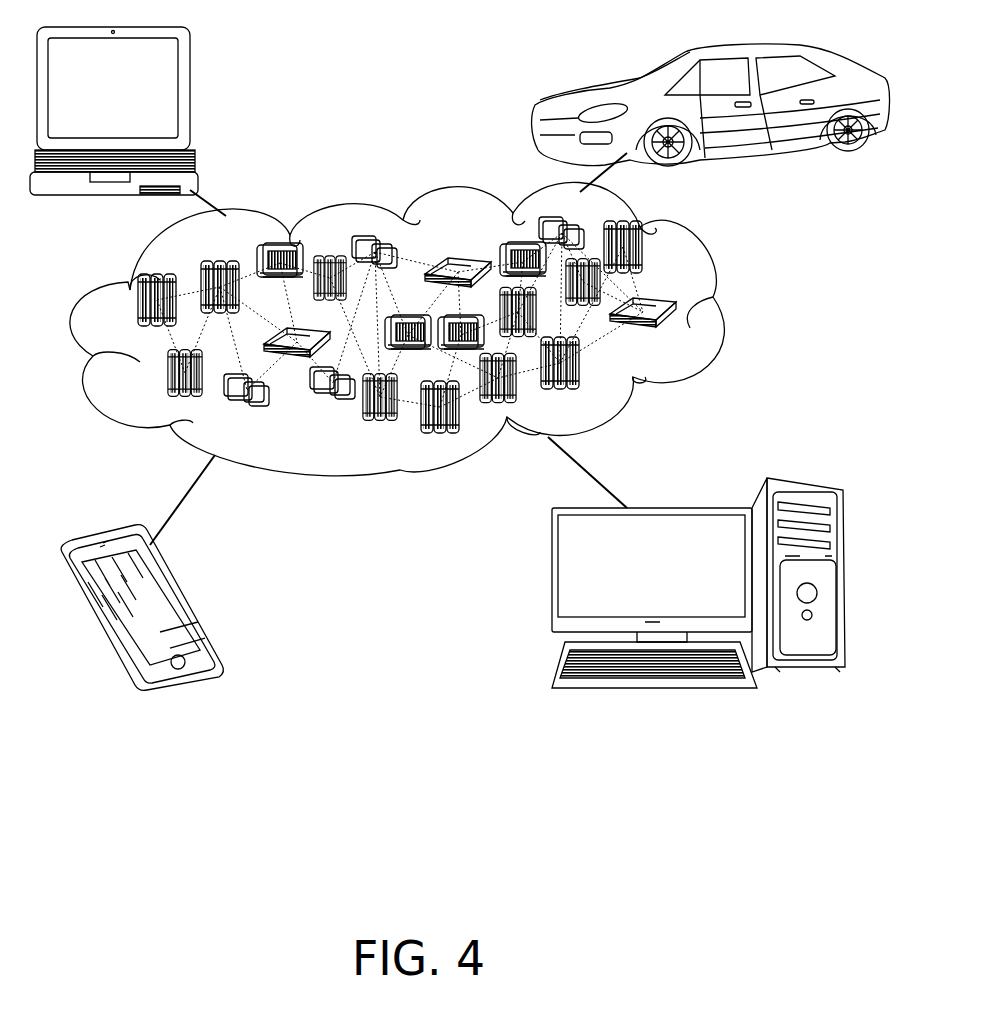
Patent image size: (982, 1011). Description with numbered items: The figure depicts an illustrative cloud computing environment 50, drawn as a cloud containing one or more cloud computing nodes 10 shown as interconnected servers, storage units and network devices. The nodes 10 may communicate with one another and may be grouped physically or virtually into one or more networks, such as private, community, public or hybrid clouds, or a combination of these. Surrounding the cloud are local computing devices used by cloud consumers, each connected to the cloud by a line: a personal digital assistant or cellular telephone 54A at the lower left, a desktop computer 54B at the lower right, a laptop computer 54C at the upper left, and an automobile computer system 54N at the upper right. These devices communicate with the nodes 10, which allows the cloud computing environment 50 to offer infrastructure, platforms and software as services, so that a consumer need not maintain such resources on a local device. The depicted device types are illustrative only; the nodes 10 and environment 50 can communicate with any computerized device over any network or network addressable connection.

The cloud computing nodes 10 is at (680, 328).
The cloud computing environment 50 is at (725, 312).
The personal digital assistant or cellular telephone 54A is at (165, 600).
The desktop computer 54B is at (740, 495).
The laptop computer 54C is at (170, 105).
The automobile computer system 54N is at (537, 113).